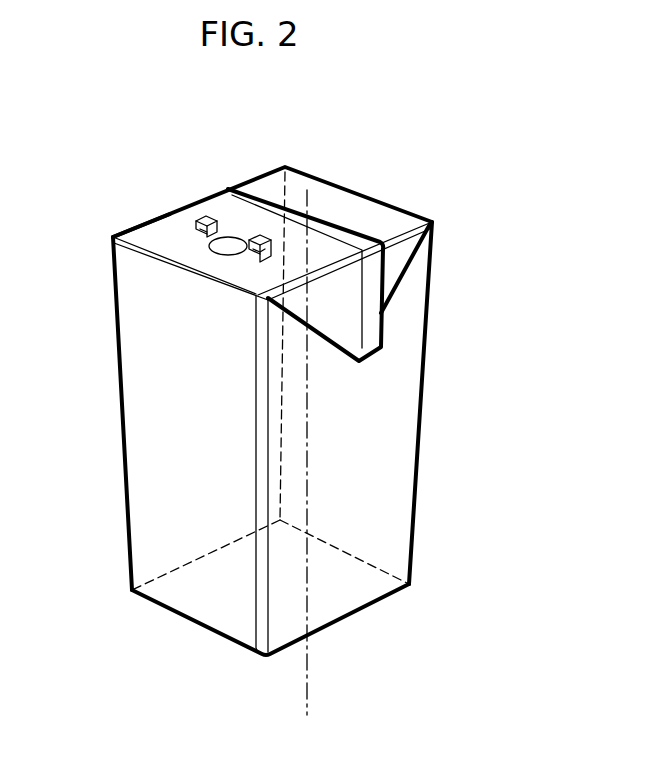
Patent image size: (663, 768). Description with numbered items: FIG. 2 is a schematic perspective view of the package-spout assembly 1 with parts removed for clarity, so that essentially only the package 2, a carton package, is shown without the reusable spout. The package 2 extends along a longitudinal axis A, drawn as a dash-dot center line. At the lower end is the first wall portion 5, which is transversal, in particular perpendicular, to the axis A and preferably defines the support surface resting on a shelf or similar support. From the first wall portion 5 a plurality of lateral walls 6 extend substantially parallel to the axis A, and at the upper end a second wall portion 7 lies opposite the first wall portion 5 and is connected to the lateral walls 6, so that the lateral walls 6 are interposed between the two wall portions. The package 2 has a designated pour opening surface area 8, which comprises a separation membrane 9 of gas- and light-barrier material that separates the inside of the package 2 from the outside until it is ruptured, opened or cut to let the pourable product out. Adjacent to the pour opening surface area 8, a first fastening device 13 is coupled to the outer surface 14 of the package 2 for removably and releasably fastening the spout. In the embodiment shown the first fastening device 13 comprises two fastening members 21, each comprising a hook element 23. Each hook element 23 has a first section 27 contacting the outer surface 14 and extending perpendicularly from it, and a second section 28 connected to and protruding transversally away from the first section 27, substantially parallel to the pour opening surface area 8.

The package-spout assembly 1 is at (452, 147).
The package 2 is at (442, 191).
The first wall portion 5 is at (203, 595).
The lateral walls 6 is at (132, 357).
The second wall portion 7 is at (334, 200).
The pour opening surface area 8 is at (233, 222).
The separation membrane 9 is at (224, 253).
The first fastening device 13 is at (303, 263).
The outer surface 14 is at (160, 246).
The fastening member 21 is at (120, 186).
The hook element 23 is at (180, 217).
The first section 27 is at (158, 238).
The second section 28 is at (205, 218).
The longitudinal axis A is at (310, 463).